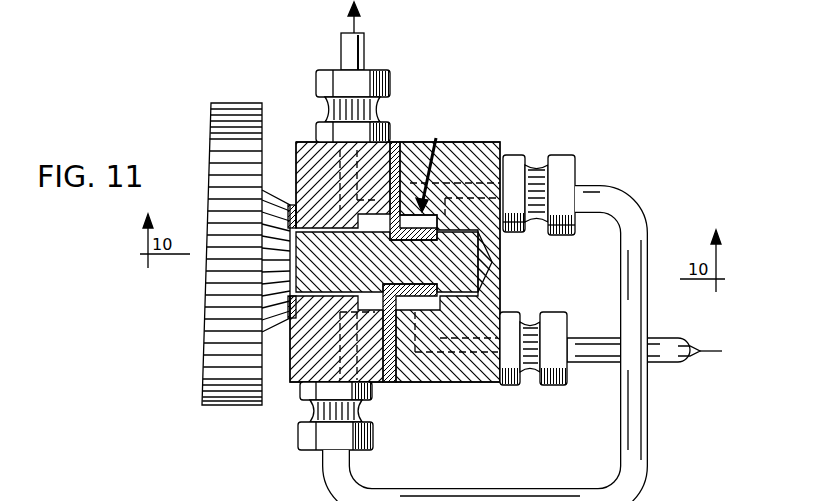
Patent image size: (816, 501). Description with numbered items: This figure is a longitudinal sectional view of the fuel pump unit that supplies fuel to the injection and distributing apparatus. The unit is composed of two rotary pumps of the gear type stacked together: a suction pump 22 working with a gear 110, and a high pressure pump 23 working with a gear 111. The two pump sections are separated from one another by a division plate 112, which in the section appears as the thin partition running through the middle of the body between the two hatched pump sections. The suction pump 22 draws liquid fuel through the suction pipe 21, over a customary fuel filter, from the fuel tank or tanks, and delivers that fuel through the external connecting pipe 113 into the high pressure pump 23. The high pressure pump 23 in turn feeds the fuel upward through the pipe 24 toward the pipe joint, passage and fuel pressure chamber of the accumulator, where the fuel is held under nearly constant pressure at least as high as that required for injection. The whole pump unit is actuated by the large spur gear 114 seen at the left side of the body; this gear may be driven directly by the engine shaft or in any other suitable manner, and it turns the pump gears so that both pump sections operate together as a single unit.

The pipe 24 is at (360, 35).
The spur gear 114 is at (222, 152).
The gear 111 is at (440, 167).
The gear 110 is at (425, 208).
The connecting pipe 113 is at (624, 213).
The high pressure pump 23 is at (292, 382).
The division plate 112 is at (386, 388).
The suction pump 22 is at (468, 386).
The suction pipe 21 is at (600, 364).